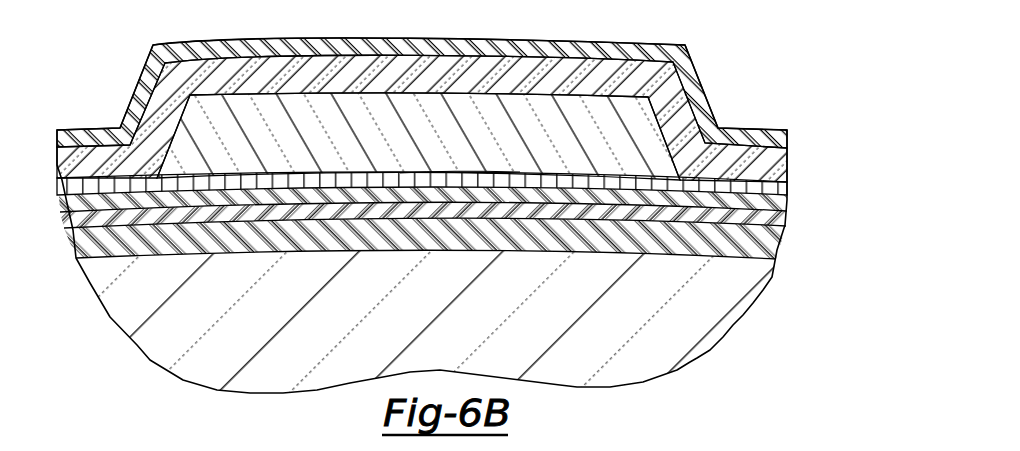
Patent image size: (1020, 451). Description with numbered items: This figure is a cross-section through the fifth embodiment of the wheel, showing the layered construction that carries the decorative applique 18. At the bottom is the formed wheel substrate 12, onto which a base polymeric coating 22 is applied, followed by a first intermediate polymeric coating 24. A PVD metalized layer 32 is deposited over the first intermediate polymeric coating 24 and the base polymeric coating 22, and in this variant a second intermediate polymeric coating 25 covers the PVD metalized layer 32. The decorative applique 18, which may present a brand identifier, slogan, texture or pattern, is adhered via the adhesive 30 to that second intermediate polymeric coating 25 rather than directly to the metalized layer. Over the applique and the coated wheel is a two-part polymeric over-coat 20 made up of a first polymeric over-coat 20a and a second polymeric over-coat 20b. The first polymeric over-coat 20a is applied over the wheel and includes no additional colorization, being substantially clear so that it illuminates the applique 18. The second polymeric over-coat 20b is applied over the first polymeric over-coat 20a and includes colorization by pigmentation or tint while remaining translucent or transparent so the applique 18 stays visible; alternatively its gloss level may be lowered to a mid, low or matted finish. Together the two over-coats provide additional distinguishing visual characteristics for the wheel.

The polymeric over-coat 20 is at (752, 110).
The second polymeric over-coat 20b is at (768, 140).
The first polymeric over-coat 20a is at (770, 177).
The decorative applique 18 is at (353, 137).
The adhesive 30 is at (475, 174).
The second intermediate polymeric coating 25 is at (785, 193).
The PVD metalized layer 32 is at (785, 202).
The first intermediate polymeric coating 24 is at (775, 218).
The base polymeric coating 22 is at (778, 257).
The wheel substrate 12 is at (406, 318).